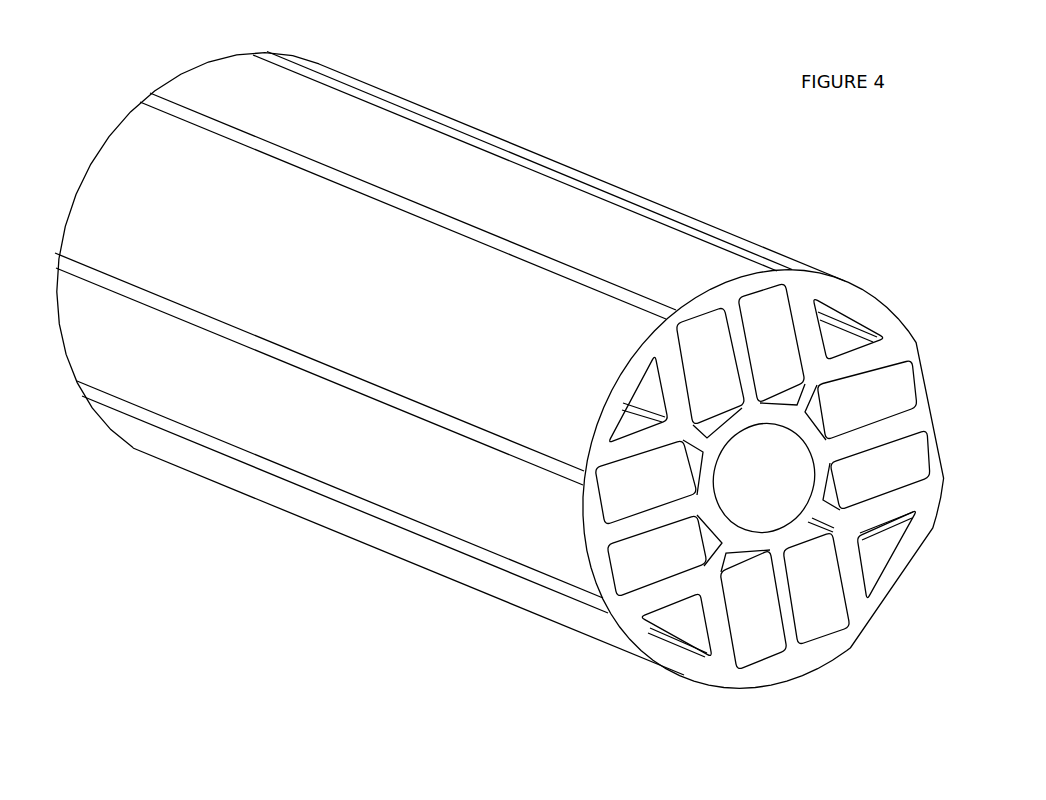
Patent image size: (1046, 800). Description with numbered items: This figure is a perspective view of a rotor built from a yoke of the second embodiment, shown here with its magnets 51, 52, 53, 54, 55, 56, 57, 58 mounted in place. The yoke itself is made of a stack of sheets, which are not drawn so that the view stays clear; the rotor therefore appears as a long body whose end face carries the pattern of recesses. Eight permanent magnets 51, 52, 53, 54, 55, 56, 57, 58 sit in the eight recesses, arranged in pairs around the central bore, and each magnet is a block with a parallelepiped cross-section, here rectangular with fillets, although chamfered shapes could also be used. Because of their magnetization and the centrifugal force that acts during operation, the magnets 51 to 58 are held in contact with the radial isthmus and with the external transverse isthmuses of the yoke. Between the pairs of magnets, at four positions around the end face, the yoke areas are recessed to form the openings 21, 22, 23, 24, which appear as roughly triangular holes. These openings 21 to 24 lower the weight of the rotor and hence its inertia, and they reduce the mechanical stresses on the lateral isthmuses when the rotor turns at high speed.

The opening 21 is at (658, 403).
The opening 22 is at (845, 348).
The opening 23 is at (895, 559).
The opening 24 is at (694, 634).
The permanent magnet 51 is at (658, 501).
The permanent magnet 52 is at (678, 566).
The permanent magnet 53 is at (761, 621).
The permanent magnet 54 is at (831, 604).
The permanent magnet 55 is at (895, 485).
The permanent magnet 56 is at (881, 407).
The permanent magnet 57 is at (781, 346).
The permanent magnet 58 is at (719, 366).